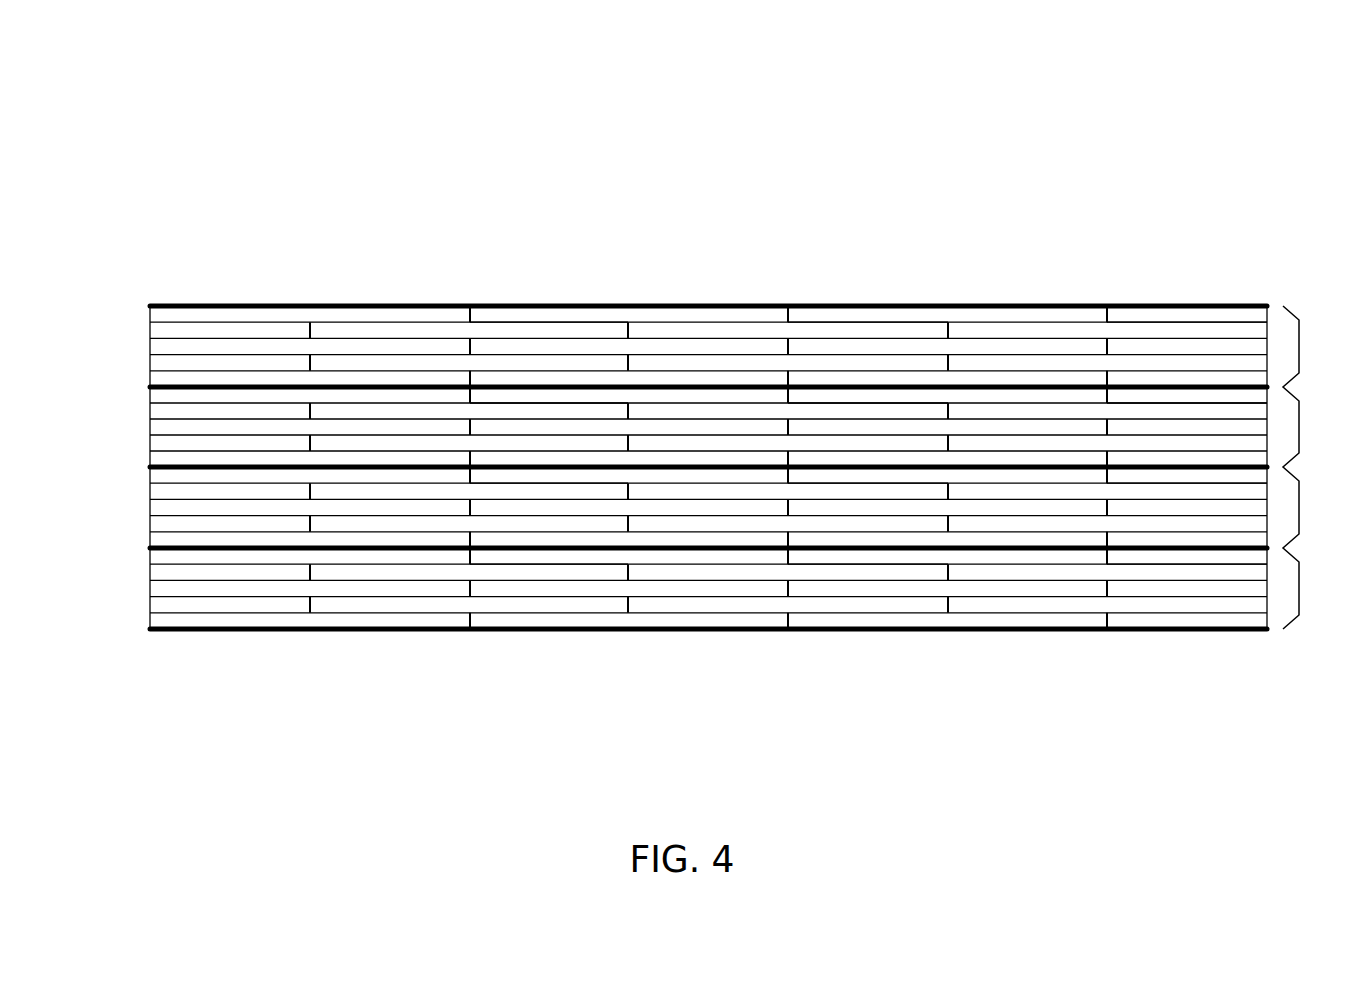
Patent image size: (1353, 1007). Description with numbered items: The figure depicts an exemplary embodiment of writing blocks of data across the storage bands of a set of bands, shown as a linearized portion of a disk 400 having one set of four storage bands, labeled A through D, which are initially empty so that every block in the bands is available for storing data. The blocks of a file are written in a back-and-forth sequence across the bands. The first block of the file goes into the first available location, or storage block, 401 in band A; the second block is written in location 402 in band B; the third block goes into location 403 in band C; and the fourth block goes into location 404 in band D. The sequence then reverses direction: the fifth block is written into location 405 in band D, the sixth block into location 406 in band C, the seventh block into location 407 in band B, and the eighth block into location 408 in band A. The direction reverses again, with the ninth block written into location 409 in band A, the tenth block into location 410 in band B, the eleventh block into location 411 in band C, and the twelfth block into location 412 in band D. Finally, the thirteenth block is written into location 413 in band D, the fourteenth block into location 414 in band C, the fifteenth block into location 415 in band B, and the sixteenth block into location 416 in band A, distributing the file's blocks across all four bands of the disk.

The disk 400 is at (176, 135).
The storage block 401 is at (150, 306).
The location 402 is at (150, 387).
The location 403 is at (150, 467).
The location 404 is at (150, 548).
The location 405 is at (502, 552).
The location 406 is at (522, 472).
The location 407 is at (512, 397).
The location 408 is at (510, 303).
The location 409 is at (828, 308).
The location 410 is at (884, 402).
The location 411 is at (842, 472).
The location 412 is at (860, 552).
The location 413 is at (1148, 552).
The location 414 is at (1180, 483).
The location 415 is at (1127, 396).
The location 416 is at (1172, 315).